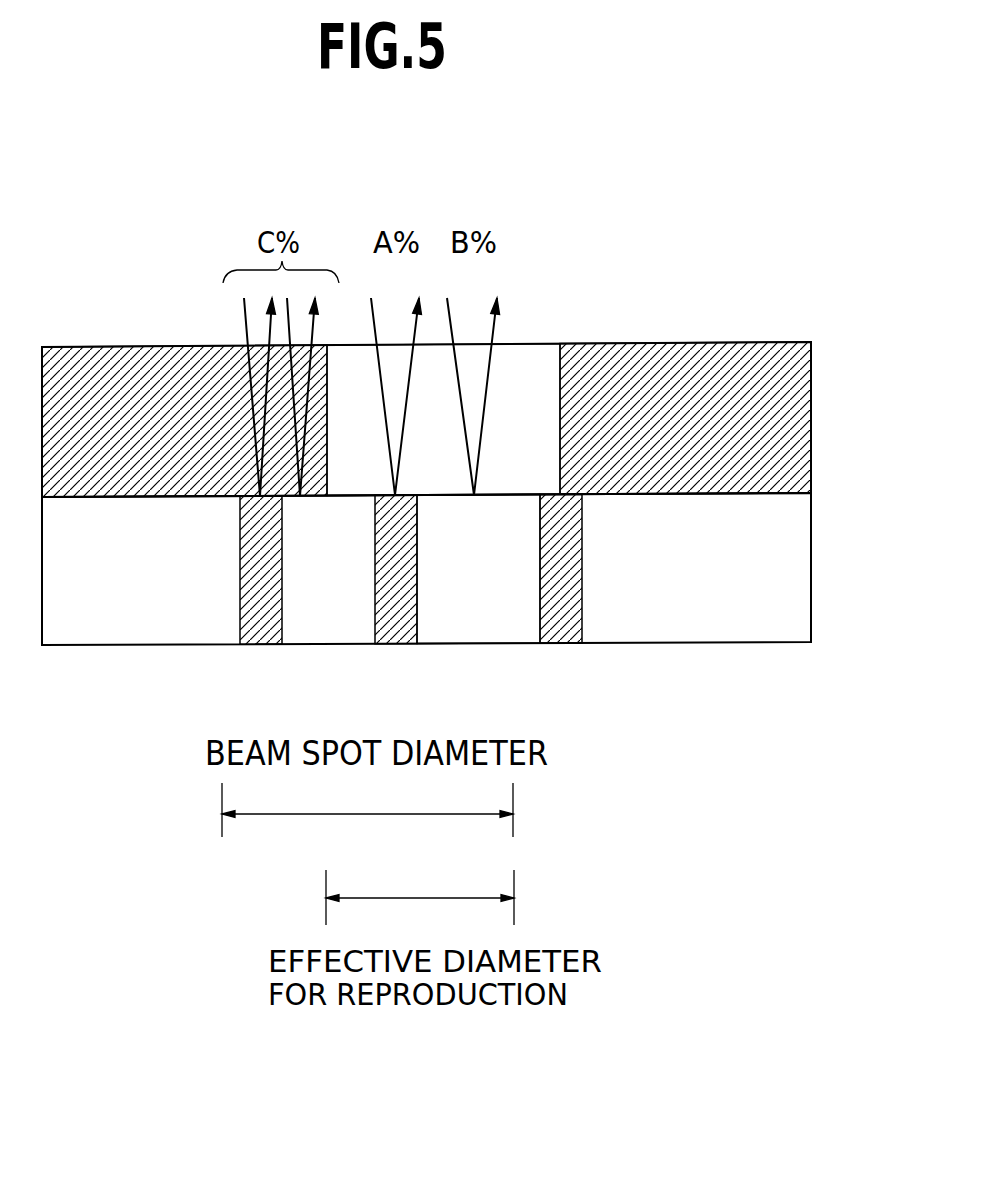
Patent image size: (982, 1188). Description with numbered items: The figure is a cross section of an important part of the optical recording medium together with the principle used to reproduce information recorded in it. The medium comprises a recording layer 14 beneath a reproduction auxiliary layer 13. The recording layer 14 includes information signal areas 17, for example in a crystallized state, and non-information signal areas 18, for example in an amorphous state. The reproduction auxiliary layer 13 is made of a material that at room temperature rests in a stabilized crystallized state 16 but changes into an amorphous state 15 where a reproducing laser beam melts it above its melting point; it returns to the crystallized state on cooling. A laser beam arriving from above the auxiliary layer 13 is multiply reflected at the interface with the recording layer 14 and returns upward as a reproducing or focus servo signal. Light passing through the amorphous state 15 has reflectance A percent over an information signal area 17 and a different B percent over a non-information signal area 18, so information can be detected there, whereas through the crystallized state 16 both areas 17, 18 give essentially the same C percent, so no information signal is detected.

The reproduction auxiliary layer 13 is at (811, 443).
The recording layer 14 is at (811, 572).
The amorphous state 15 is at (508, 358).
The stabilized crystallized state 16 is at (652, 355).
The information signal area 17 is at (398, 644).
The non-information signal area 18 is at (480, 644).